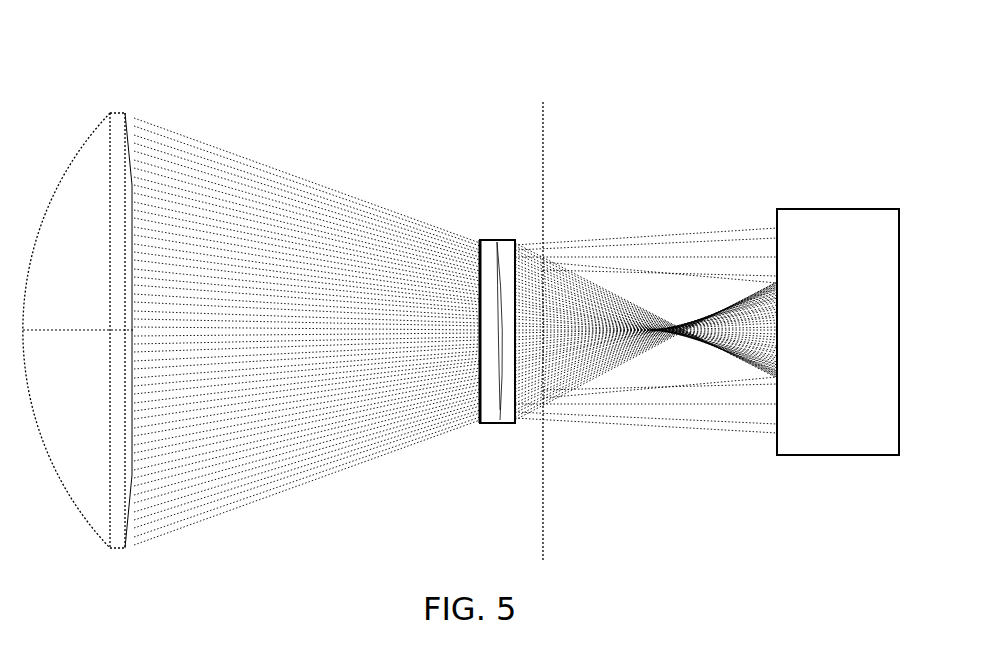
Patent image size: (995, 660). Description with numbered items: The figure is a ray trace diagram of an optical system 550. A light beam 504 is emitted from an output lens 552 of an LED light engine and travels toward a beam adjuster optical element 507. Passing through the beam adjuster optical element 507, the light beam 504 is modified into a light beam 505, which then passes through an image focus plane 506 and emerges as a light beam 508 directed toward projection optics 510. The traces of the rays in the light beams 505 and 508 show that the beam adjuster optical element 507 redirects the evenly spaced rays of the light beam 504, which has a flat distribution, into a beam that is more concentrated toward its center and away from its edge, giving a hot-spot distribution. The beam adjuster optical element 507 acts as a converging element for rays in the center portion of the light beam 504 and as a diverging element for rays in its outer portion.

The optical system 550 is at (352, 66).
The output lens 552 is at (121, 122).
The light beam 504 is at (310, 190).
The beam adjuster optical element 507 is at (480, 238).
The light beam 505 is at (535, 250).
The image focus plane 506 is at (543, 128).
The light beam 508 is at (672, 242).
The projection optics 510 is at (838, 218).